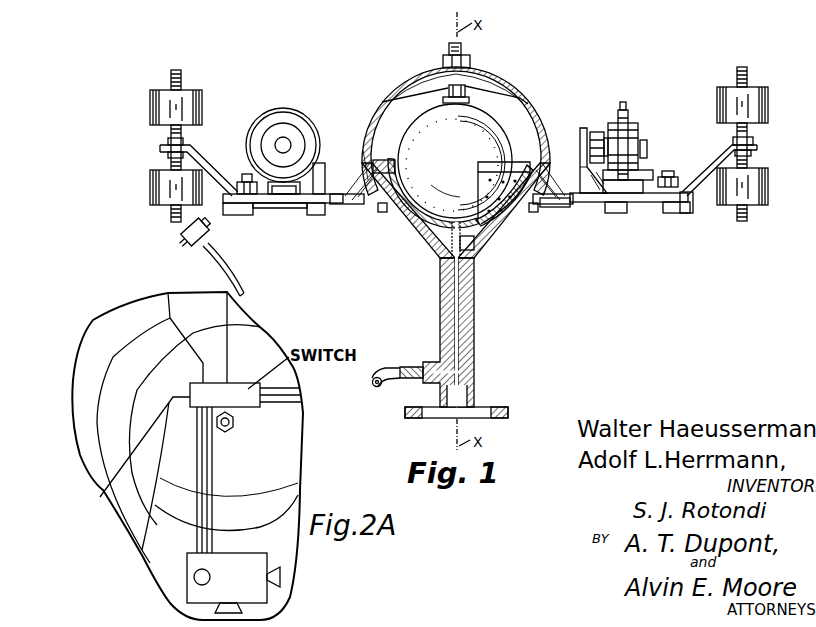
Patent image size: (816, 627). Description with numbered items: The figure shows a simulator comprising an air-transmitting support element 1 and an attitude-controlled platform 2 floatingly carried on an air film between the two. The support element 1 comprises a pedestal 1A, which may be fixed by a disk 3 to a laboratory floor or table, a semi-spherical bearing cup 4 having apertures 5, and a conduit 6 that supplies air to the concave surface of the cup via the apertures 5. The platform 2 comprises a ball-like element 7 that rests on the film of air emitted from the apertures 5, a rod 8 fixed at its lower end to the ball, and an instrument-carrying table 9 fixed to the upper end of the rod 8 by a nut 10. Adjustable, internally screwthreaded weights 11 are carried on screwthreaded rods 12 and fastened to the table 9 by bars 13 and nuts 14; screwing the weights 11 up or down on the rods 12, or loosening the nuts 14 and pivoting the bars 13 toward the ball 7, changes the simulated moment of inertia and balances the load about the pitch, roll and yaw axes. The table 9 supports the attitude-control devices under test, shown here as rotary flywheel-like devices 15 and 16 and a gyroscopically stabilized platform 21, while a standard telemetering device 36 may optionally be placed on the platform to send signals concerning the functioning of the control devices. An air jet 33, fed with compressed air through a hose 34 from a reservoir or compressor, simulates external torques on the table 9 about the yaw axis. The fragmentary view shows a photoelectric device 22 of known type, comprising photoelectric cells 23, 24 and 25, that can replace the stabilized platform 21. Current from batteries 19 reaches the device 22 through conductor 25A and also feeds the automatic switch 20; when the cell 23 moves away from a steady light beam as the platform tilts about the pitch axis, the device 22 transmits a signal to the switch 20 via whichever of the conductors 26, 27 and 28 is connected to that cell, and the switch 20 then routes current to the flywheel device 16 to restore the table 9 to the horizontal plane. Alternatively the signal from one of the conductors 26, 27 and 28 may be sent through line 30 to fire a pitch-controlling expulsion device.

In FIG. 1, the air-transmitting support element 1 is at (505, 308).
In FIG. 1, the pedestal 1A is at (440, 279).
In FIG. 1, the attitude-controlled platform 2 is at (544, 95).
In FIG. 1, the disk 3 is at (490, 408).
In FIG. 1, the semi-spherical bearing cup 4 is at (411, 214).
In FIG. 1, the apertures 5 is at (498, 202).
In FIG. 1, the conduit 6 is at (457, 307).
In FIG. 1, the ball-like element 7 is at (443, 142).
In FIG. 1, the rod 8 is at (470, 92).
In FIG. 1, the instrument-carrying table 9 is at (363, 150).
In FIG. 1, the nut 10 is at (469, 62).
In FIG. 1, the adjustable internally screwthreaded weights 11 is at (151, 188).
In FIG. 1, the screwthreaded rods 12 is at (182, 87).
In FIG. 1, the bars 13 is at (201, 153).
In FIG. 1, the nuts 14 is at (238, 178).
In FIG. 1, the rotary flywheel-like device 15 is at (302, 113).
In FIG. 1, the rotary flywheel-like device 16 is at (623, 107).
In FIG. 1, the batteries 19 is at (589, 188).
In FIG. 1, the gyroscopically stabilized platform 21 is at (325, 167).
In FIG. 1, the air jet 33 is at (214, 229).
In FIG. 1, the hose 34 is at (227, 278).
In FIG. 1, the telemetering device 36 is at (651, 171).
In FIG. 2A, the automatic switch 20 is at (233, 383).
In FIG. 2A, the photoelectric device 22 is at (268, 562).
In FIG. 2A, the photoelectric cell 23 is at (219, 609).
In FIG. 2A, the photoelectric cell 24 is at (280, 575).
In FIG. 2A, the photoelectric cell 25 is at (209, 575).
In FIG. 2A, the conductor 25A is at (212, 500).
In FIG. 2A, the conductor 26 is at (208, 484).
In FIG. 2A, the conductor 27 is at (211, 446).
In FIG. 2A, the conductor 28 is at (204, 462).
In FIG. 2A, the line 30 is at (193, 352).